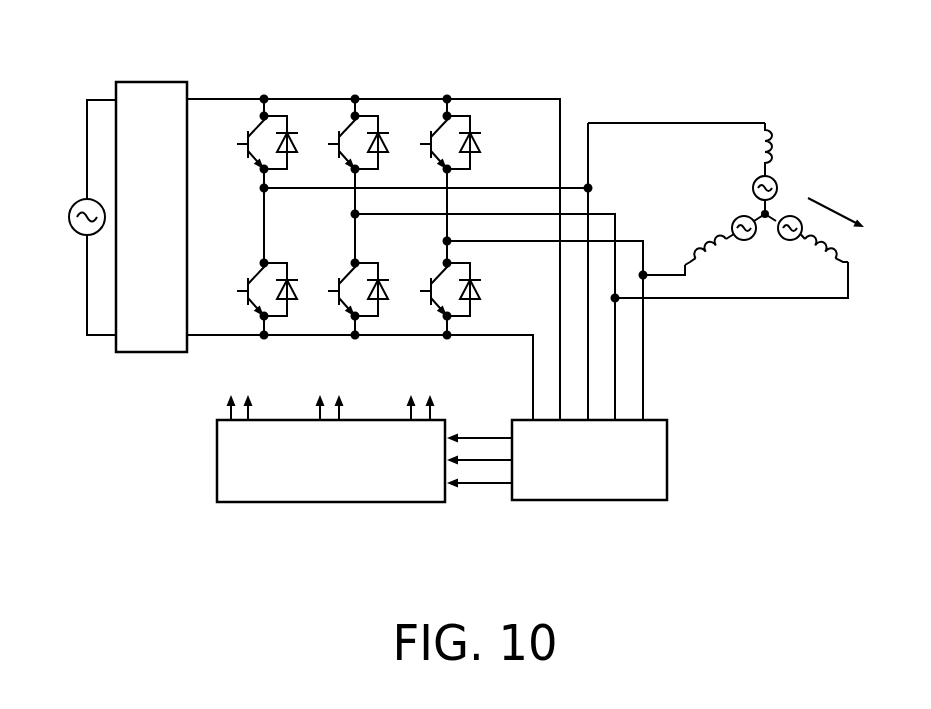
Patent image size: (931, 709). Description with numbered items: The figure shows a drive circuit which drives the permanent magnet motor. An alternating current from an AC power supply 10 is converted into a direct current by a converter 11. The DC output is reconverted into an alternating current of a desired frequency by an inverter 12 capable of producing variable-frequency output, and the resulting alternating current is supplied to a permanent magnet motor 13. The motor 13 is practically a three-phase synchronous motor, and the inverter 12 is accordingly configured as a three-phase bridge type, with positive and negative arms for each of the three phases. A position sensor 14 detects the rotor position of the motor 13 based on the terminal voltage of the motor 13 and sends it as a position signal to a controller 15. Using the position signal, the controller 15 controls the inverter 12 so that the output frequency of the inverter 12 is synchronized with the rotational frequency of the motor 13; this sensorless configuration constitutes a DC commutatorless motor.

The AC power supply 10 is at (75, 205).
The converter 11 is at (150, 82).
The inverter 12 is at (384, 81).
The permanent magnet motor 13 is at (727, 189).
The position sensor 14 is at (593, 500).
The controller 15 is at (327, 502).